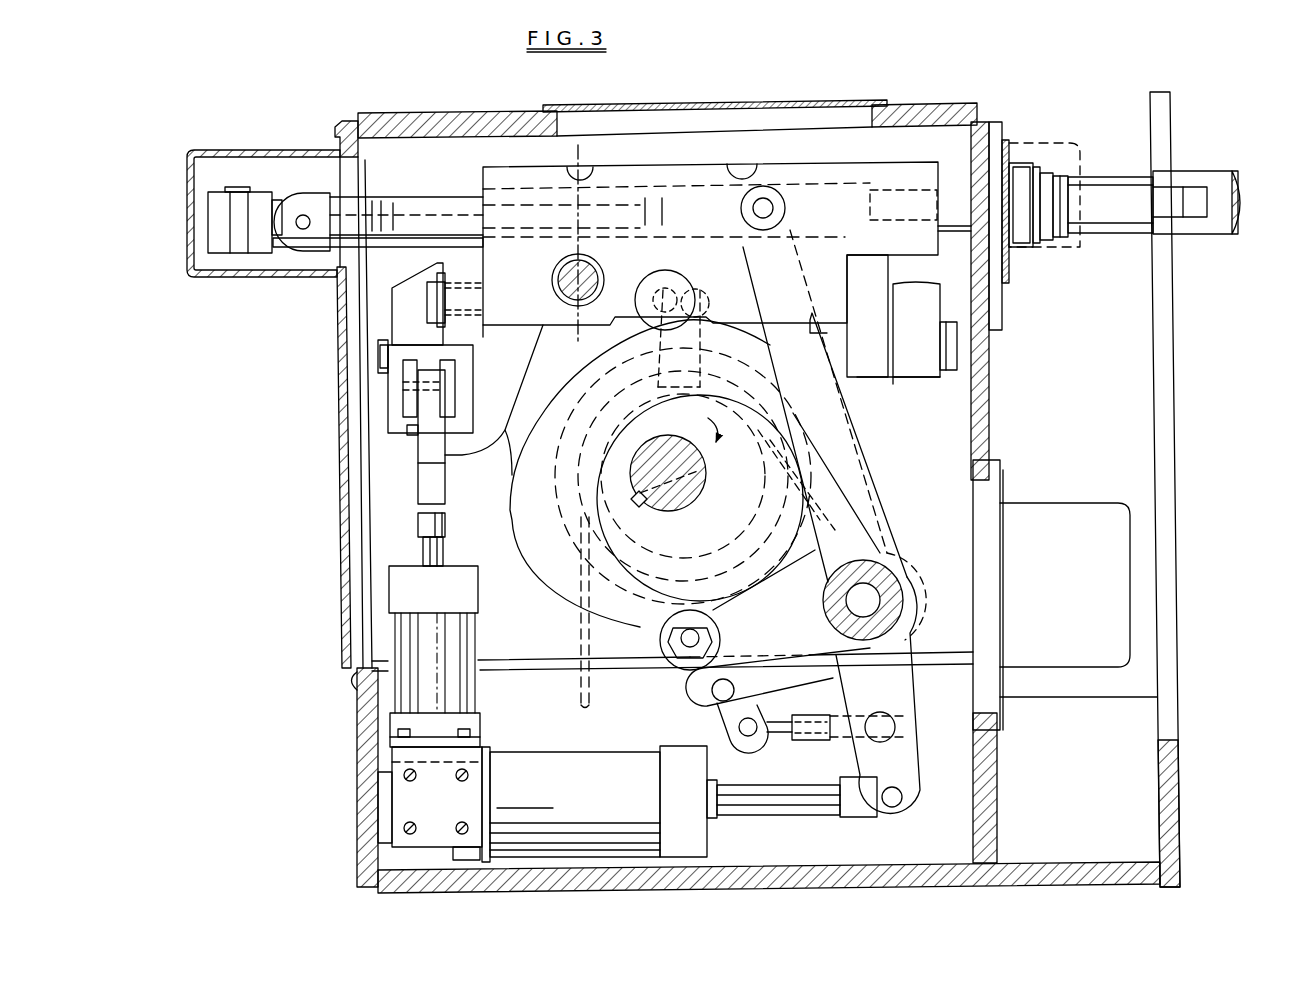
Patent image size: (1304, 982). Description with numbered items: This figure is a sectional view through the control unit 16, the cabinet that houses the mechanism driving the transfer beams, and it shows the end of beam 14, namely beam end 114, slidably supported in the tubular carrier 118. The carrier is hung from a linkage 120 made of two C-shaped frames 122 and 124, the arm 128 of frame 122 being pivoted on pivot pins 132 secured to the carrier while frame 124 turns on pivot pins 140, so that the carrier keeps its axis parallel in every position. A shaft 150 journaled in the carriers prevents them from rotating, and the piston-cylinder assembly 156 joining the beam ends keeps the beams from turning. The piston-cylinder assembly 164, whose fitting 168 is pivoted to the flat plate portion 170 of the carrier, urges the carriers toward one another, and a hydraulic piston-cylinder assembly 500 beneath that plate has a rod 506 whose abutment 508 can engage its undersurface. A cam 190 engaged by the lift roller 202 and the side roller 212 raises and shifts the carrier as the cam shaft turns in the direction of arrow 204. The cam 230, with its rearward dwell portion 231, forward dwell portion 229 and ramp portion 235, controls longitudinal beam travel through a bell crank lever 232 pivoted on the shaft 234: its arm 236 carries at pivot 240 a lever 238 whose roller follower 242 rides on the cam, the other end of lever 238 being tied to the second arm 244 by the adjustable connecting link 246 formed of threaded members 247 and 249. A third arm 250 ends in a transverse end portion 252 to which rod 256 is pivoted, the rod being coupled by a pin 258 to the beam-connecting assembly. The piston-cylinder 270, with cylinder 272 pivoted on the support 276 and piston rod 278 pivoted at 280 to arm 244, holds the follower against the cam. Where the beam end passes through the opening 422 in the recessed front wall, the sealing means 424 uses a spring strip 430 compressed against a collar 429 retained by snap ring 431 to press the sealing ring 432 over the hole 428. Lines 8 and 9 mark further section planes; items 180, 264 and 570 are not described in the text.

The section line 8- 8 is at (578, 152).
The section line 9- 9 is at (667, 609).
The beam 14 is at (1240, 186).
The control unit 16 is at (362, 787).
The beam end 114 is at (1116, 236).
The tubular carrier 118 is at (857, 172).
The linkage 120 is at (952, 373).
The C-shaped frame 122 is at (882, 382).
The C-shaped frame 124 is at (930, 300).
The arm 128 is at (484, 335).
The pivot pin 132 is at (430, 301).
The pivot pin 140 is at (378, 356).
The shaft 150 is at (598, 278).
The piston-cylinder assembly 156 is at (203, 212).
The piston-cylinder assembly 164 is at (392, 390).
The fitting 168 is at (410, 410).
The portion 170 is at (440, 487).
The shaft 180 is at (632, 484).
The cam 190 is at (552, 600).
The lift roller 202 is at (678, 281).
The arrow 204 is at (694, 464).
The side roller 212 is at (704, 337).
The forward dwell portion 229 is at (630, 463).
The cam 230 is at (628, 520).
The rearward dwell portion 231 is at (787, 550).
The bell crank lever 232 is at (873, 481).
The shaft 234 is at (903, 600).
The ramp portion 235 is at (640, 548).
The arm 236 is at (773, 627).
The lever 238 is at (695, 676).
The pivot 240 is at (714, 698).
The roller follower 242 is at (662, 642).
The arm 244 is at (912, 660).
The connecting link 246 is at (818, 715).
The member 247 is at (776, 742).
The member 249 is at (896, 726).
The third arm 250 is at (848, 449).
The transverse end portion 252 is at (768, 198).
The rod 256 is at (672, 192).
The pin 258 is at (303, 215).
The cover plate 264 is at (936, 102).
The piston-cylinder 270 is at (570, 750).
The cylinder 272 is at (597, 787).
The support 276 is at (378, 825).
The piston rod 278 is at (800, 821).
The pivot 280 is at (903, 792).
The opening 422 is at (1005, 162).
The sealing means 424 is at (1037, 168).
The circular opening 428 is at (1018, 160).
The collar 429 is at (1060, 177).
The spring strip 430 is at (1047, 174).
The snap ring 431 is at (1066, 182).
The sealing ring 432 is at (1009, 275).
The hydraulic piston-cylinder assembly 500 is at (396, 638).
The rod 506 is at (426, 550).
The abutment 508 is at (418, 526).
The cable 570 is at (418, 507).